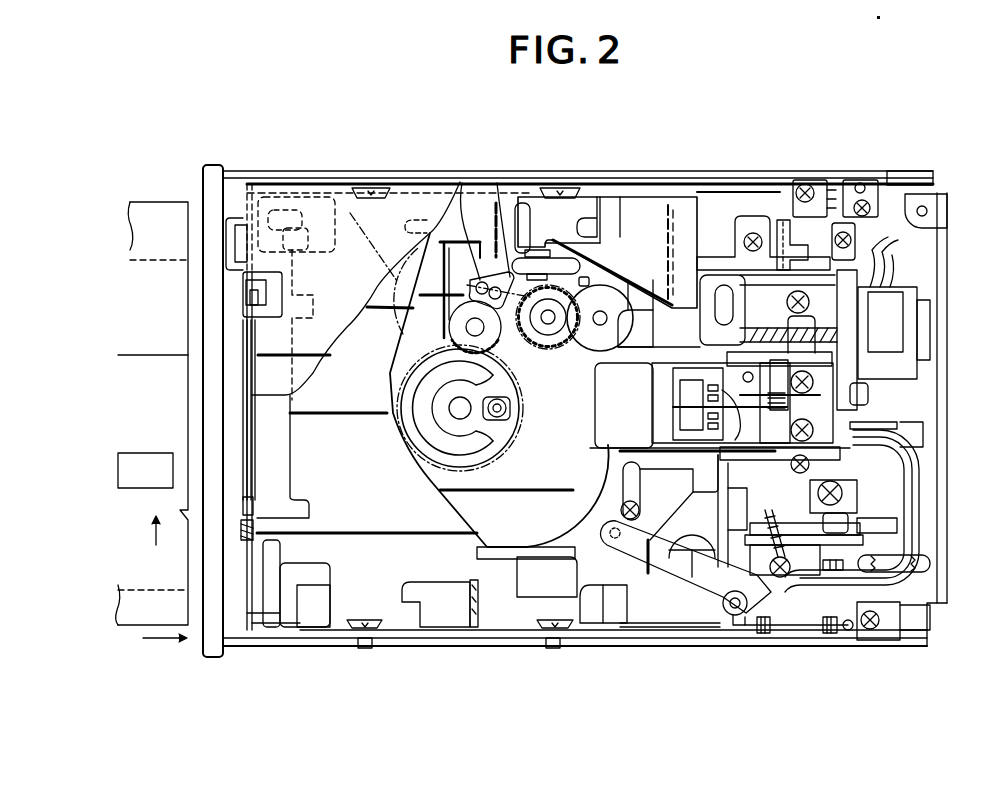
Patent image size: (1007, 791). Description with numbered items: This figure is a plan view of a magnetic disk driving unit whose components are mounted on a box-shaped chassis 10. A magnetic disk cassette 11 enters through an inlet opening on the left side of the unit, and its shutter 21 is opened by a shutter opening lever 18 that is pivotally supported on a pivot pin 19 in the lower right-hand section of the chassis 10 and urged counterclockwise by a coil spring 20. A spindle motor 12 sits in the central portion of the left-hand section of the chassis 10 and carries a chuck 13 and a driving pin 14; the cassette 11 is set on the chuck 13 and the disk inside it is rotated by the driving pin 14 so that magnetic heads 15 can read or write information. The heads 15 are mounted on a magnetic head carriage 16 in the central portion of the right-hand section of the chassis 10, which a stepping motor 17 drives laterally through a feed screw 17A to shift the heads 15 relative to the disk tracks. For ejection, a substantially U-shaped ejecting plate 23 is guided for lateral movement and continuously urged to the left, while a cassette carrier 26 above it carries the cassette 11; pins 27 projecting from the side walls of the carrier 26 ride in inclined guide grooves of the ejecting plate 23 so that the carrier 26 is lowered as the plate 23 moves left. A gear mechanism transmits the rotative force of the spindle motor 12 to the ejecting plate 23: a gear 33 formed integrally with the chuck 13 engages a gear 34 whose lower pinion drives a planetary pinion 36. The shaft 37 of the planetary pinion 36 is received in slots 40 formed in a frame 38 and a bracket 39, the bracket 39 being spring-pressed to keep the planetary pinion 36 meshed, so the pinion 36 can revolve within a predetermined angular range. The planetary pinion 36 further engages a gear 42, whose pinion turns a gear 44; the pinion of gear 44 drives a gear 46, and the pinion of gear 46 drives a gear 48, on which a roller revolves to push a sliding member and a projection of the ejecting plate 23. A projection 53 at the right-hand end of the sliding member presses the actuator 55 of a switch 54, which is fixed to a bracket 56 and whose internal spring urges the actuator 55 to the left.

The chassis 10 is at (447, 650).
The magnetic disk cassette 11 is at (150, 628).
The spindle motor 12 is at (552, 515).
The chuck 13 is at (482, 440).
The driving pin 14 is at (507, 410).
The magnetic heads 15 is at (605, 422).
The magnetic head carriage 16 is at (837, 422).
The stepping motor 17 is at (905, 320).
The feed screw 17A is at (837, 335).
The shutter opening lever 18 is at (677, 590).
The pivot pin 19 is at (737, 615).
The coil spring 20 is at (828, 640).
The shutter 21 is at (158, 462).
The ejecting plate 23 is at (737, 193).
The cassette carrier 26 is at (678, 200).
The pins 27 is at (372, 185).
The gear 33 is at (405, 437).
The gear 34 is at (465, 327).
The planetary pinion 36 is at (350, 213).
The shaft 37 is at (508, 250).
The frame 38 is at (455, 272).
The bracket 39 is at (483, 282).
The slots 40 is at (458, 240).
The gear 42 is at (545, 349).
The gear 44 is at (590, 351).
The gear 46 is at (646, 349).
The gear 48 is at (607, 274).
The projection 53 is at (783, 232).
The switch 54 is at (815, 185).
The actuator 55 is at (880, 230).
The bracket 56 is at (878, 190).